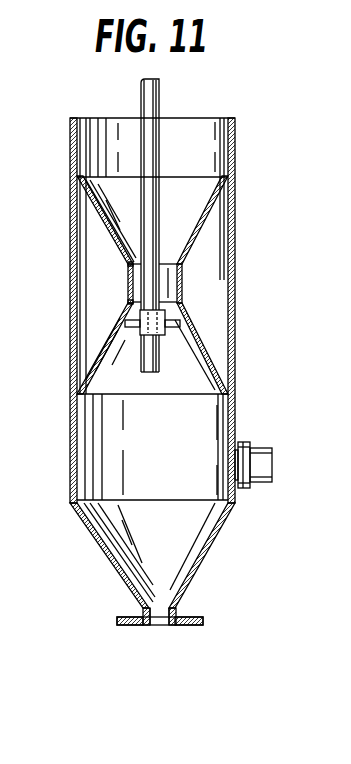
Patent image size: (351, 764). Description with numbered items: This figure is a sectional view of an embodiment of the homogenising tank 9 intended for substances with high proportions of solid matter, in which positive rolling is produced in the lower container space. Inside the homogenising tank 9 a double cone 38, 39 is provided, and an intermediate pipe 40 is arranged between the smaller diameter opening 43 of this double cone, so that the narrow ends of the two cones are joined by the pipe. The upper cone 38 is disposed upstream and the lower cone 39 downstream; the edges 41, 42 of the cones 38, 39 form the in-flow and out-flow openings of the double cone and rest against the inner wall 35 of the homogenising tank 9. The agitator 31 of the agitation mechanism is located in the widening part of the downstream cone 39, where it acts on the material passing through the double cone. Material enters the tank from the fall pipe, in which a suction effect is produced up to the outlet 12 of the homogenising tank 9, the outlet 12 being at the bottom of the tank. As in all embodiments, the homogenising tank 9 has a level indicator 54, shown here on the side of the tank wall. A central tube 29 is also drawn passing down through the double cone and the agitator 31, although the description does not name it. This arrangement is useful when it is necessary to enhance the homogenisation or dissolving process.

The homogenising tank 9 is at (70, 445).
The outlet 12 is at (167, 608).
The feed tube 29 is at (160, 99).
The agitator 31 is at (173, 332).
The inner wall 35 is at (238, 425).
The cone 38 is at (113, 242).
The cone 39 is at (210, 340).
The intermediate pipe 40 is at (182, 283).
The edge 41 is at (235, 178).
The edge 42 is at (235, 390).
The smaller diameter opening 43 is at (131, 263).
The level indicator 54 is at (263, 462).